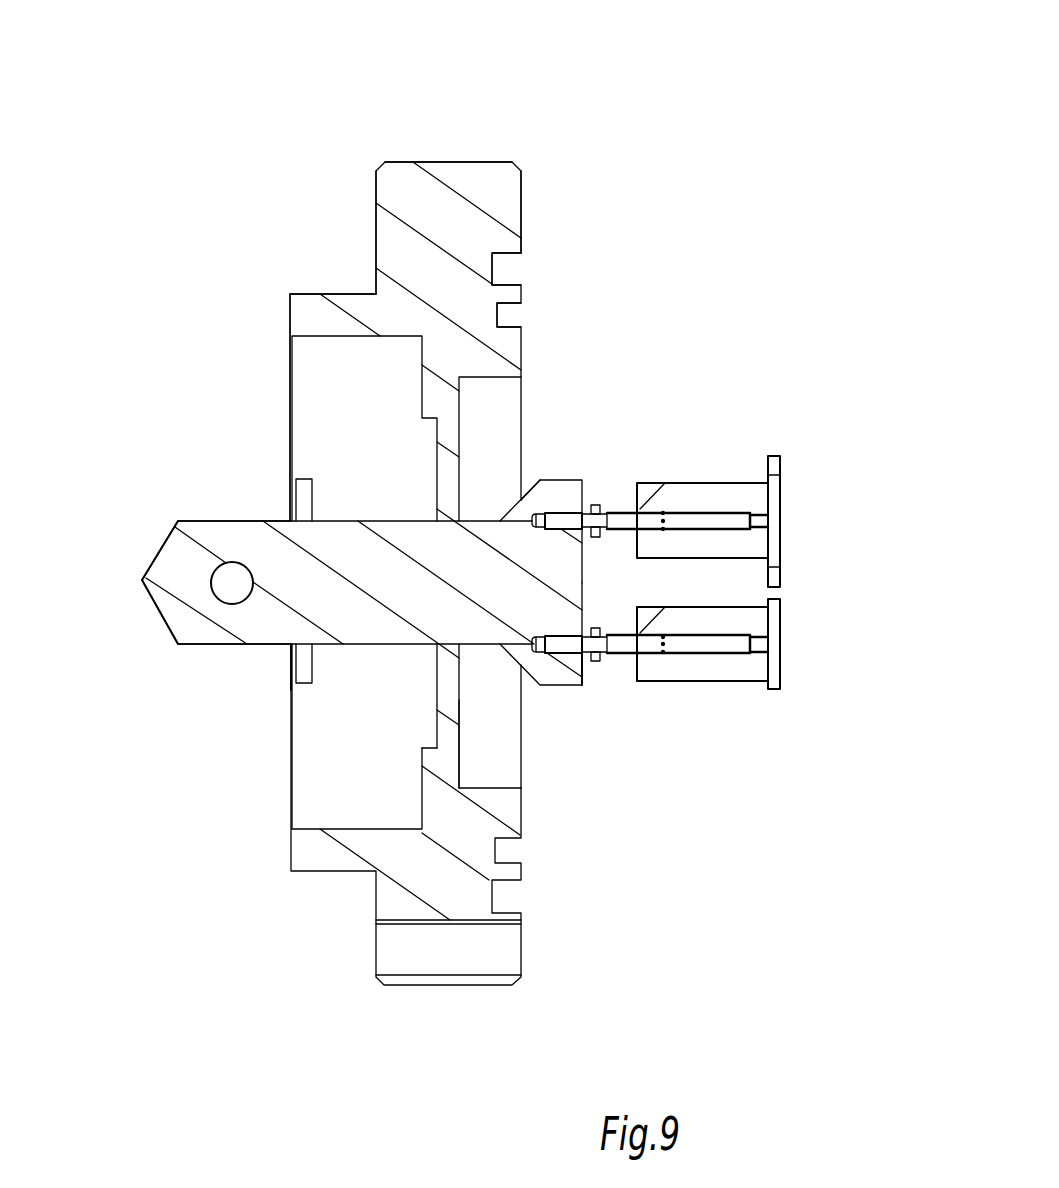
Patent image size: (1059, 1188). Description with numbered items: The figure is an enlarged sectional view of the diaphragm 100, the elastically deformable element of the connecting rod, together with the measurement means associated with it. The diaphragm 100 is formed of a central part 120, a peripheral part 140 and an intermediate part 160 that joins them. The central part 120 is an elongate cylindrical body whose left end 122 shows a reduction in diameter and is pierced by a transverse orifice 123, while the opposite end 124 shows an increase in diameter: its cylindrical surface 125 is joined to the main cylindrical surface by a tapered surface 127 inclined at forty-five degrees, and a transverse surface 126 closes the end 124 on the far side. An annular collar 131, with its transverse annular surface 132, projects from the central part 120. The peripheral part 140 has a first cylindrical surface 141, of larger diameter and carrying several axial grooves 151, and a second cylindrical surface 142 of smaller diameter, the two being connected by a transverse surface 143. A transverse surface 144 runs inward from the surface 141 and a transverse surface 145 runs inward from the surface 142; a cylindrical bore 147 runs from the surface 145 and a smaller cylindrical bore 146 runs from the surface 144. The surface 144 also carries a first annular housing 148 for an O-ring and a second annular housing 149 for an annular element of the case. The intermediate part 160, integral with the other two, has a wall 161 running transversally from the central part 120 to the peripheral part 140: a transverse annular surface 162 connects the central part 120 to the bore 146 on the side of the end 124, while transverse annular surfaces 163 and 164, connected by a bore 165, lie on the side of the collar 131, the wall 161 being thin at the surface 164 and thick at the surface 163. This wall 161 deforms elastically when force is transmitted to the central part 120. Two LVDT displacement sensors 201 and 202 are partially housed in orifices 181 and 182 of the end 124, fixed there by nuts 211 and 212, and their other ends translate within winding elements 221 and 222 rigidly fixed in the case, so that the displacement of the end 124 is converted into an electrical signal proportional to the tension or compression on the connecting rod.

The diaphragm 100 is at (622, 95).
The central part 120 is at (155, 534).
The end 122 is at (156, 611).
The orifice 123 is at (213, 577).
The end 124 is at (558, 498).
The cylindrical surface 125 is at (553, 693).
The transverse surface 126 is at (591, 672).
The tapered surface 127 is at (520, 497).
The annular collar 131 is at (297, 685).
The transverse annular surface 132 is at (291, 661).
The peripheral part 140 is at (203, 315).
The first cylindrical surface 141 is at (407, 158).
The second cylindrical surface 142 is at (333, 292).
The transverse surface 143 is at (374, 200).
The transverse surface 144 is at (524, 200).
The transverse surface 145 is at (288, 317).
The cylindrical bore 146 is at (484, 382).
The cylindrical bore 147 is at (345, 340).
The first annular housing 148 is at (510, 268).
The second annular housing 149 is at (523, 315).
The grooves 151 is at (372, 942).
The intermediate part 160 is at (300, 781).
The wall 161 is at (445, 692).
The transverse annular surface 162 is at (462, 747).
The transverse annular surface 163 is at (420, 788).
The transverse annular surface 164 is at (436, 671).
The step bottom 165 is at (425, 739).
The orifice 181 is at (550, 530).
The orifice 182 is at (555, 632).
The displacement sensor 201 is at (640, 507).
The displacement sensor 202 is at (652, 647).
The nut 211 is at (598, 503).
The nut 212 is at (598, 662).
The element comprising a winding 221 is at (710, 497).
The element comprising a winding 222 is at (710, 667).